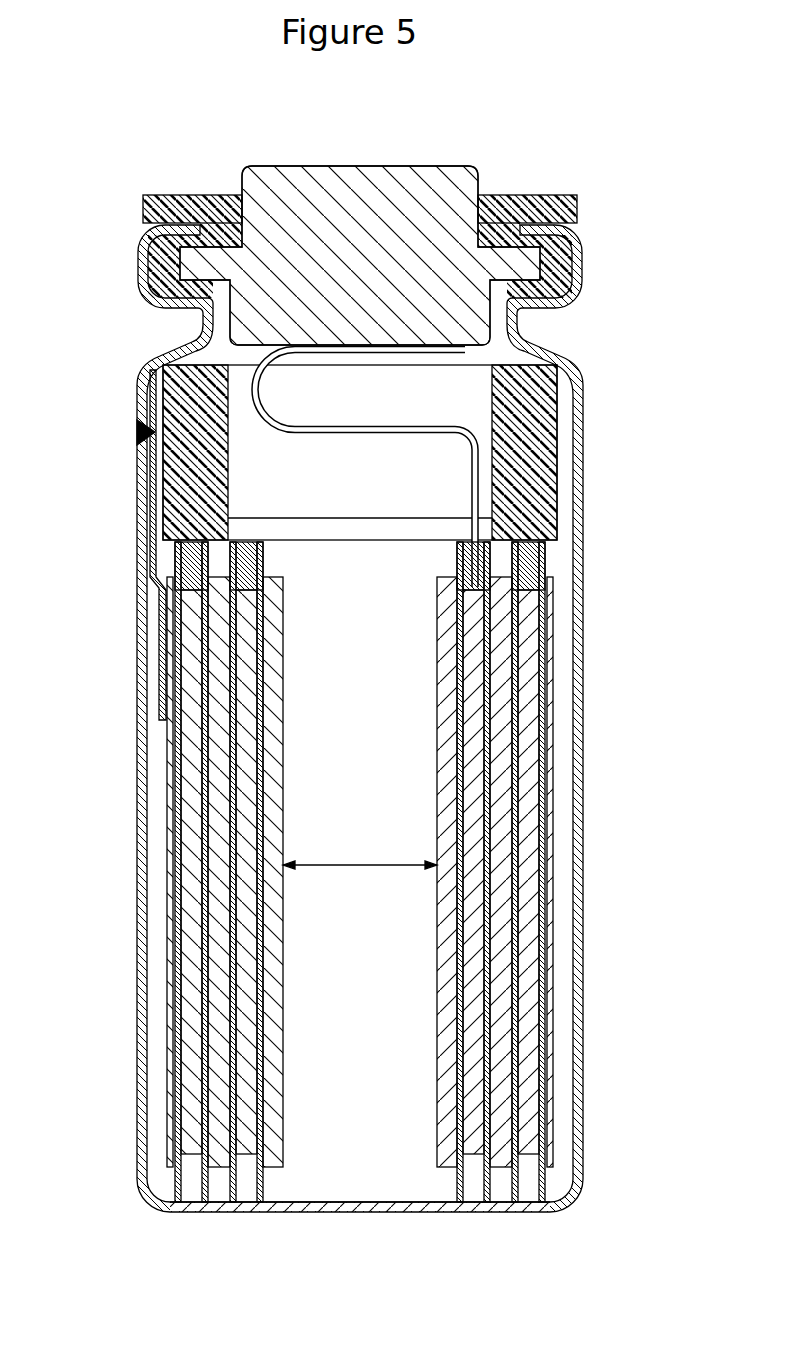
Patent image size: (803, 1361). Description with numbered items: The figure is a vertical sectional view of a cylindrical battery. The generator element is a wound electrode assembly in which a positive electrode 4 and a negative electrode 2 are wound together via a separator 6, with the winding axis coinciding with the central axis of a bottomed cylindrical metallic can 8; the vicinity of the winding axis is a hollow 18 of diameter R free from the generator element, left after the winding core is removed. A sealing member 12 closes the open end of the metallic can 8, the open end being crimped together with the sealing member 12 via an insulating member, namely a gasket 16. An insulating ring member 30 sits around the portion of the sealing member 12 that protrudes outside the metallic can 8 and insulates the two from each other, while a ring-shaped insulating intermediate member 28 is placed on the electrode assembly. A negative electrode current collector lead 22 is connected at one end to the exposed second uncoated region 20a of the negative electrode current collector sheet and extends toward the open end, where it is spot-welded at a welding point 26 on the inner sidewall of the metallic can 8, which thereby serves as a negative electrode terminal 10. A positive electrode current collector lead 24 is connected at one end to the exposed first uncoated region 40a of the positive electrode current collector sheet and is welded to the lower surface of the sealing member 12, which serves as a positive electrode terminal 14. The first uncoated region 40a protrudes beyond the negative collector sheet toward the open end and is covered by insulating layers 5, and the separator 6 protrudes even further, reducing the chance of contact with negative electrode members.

The negative electrode 2 is at (371, 845).
The positive electrode 4 is at (530, 830).
The insulating layers 5 is at (244, 548).
The separator 6 is at (544, 562).
The metallic can 8 is at (584, 413).
The negative electrode terminal 10 is at (491, 1223).
The sealing member 12 is at (400, 167).
The positive electrode terminal 14 is at (398, 212).
The insulating member (gasket) 16 is at (560, 268).
The hollow 18 is at (347, 1180).
The second uncoated region (A) 20a is at (168, 806).
The negative electrode current collector lead 22 is at (152, 533).
The positive electrode current collector lead 24 is at (474, 494).
The welding point 26 is at (137, 433).
The insulating intermediate member 28 is at (548, 460).
The insulating ring member 30 is at (525, 195).
The first uncoated region 40a is at (260, 562).